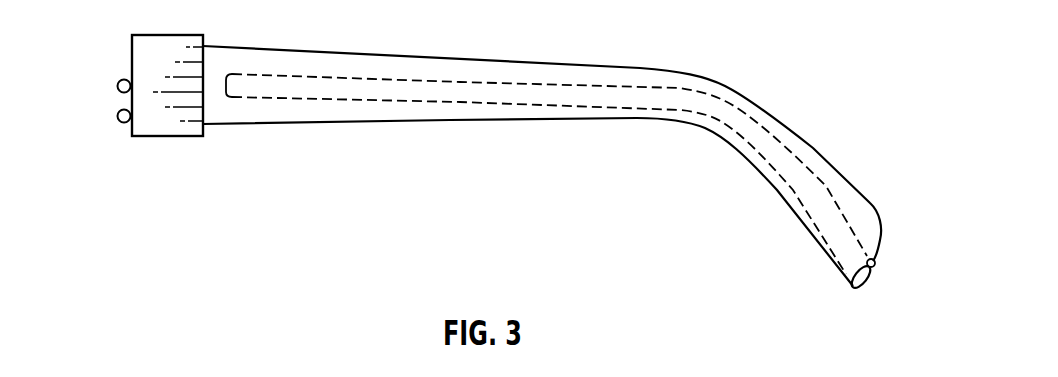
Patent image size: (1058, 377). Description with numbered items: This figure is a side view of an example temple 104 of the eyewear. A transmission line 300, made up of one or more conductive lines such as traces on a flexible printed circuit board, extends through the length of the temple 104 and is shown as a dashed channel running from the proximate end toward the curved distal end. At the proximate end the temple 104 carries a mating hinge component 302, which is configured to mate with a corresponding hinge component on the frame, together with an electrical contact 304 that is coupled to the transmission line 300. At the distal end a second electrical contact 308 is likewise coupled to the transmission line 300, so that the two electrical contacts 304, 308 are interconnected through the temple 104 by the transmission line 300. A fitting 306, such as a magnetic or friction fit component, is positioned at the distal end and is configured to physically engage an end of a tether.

The temple 104 is at (597, 66).
The transmission line 300 is at (466, 80).
The mating hinge component 302 is at (118, 84).
The electrical contact 304 is at (118, 118).
The fitting 306 is at (870, 287).
The electrical contact 308 is at (875, 262).